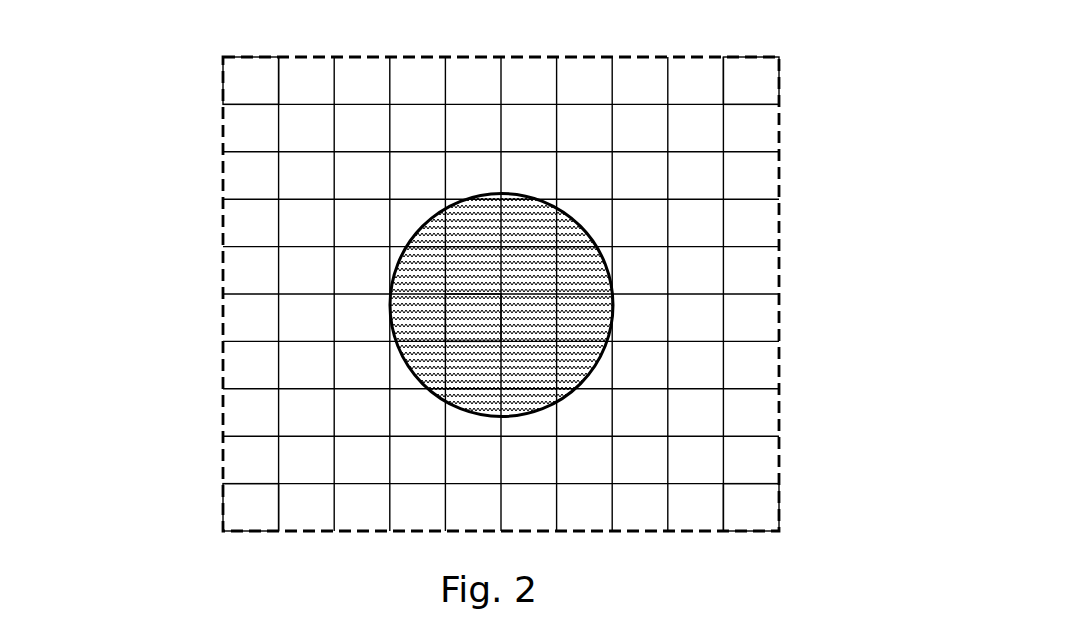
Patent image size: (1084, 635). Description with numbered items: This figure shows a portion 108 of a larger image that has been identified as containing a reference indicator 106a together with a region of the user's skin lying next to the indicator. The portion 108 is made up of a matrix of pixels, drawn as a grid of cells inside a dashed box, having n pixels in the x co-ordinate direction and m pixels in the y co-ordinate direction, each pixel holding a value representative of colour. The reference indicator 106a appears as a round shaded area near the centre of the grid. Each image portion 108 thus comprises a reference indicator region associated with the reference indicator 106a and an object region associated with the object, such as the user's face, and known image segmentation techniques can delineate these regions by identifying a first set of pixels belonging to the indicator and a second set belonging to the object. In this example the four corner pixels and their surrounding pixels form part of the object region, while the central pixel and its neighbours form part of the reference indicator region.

The portion of the image 108 is at (816, 129).
The reference indicator 106a is at (389, 330).